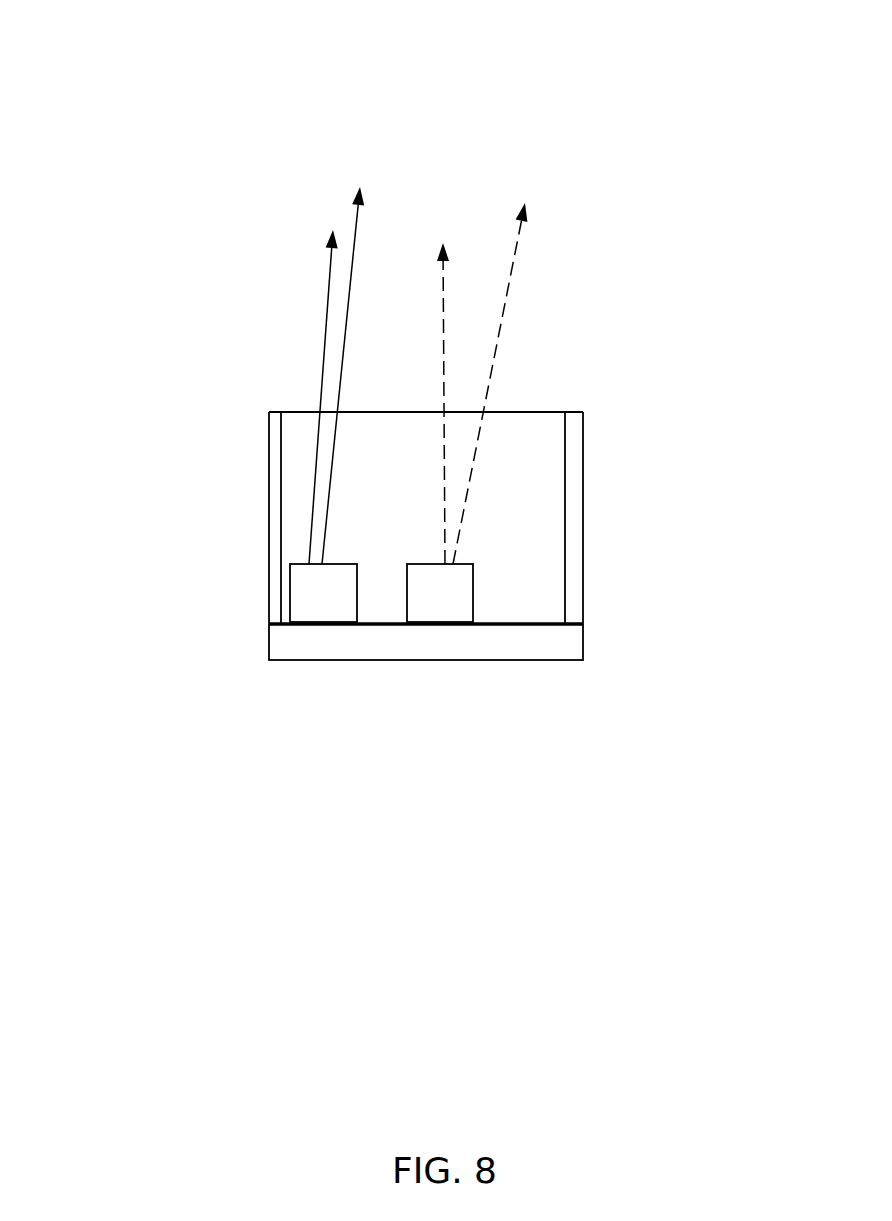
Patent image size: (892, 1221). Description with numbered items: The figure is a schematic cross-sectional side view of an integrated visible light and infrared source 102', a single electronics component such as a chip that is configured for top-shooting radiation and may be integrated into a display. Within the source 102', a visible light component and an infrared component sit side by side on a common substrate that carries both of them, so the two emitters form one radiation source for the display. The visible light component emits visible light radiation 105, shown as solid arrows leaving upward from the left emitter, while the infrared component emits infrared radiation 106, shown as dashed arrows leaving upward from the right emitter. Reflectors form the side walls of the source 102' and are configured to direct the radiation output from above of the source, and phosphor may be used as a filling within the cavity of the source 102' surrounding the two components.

The integrated VL and IR source 102' is at (420, 333).
The visible light radiation 105 is at (362, 185).
The IR radiation 106 is at (443, 327).